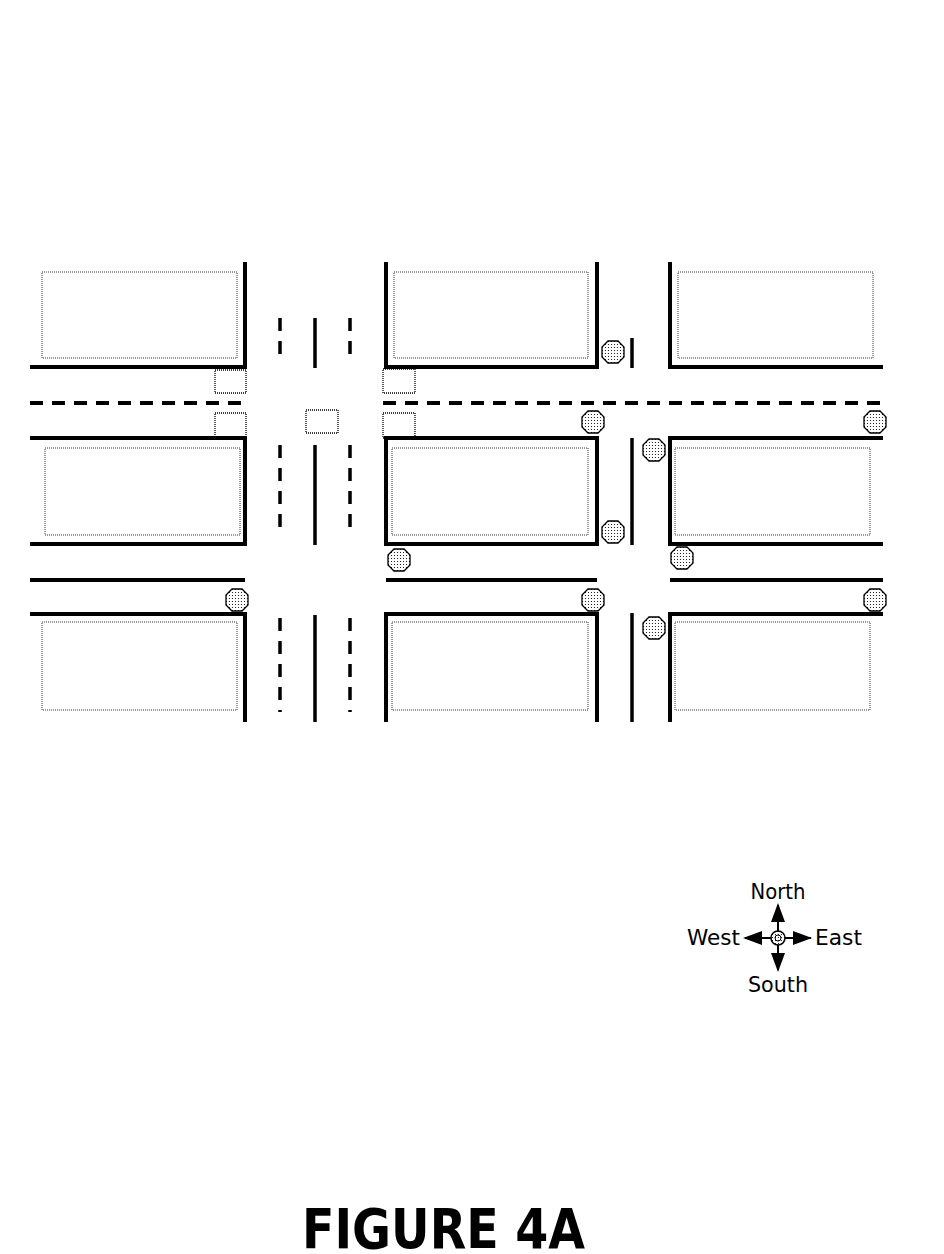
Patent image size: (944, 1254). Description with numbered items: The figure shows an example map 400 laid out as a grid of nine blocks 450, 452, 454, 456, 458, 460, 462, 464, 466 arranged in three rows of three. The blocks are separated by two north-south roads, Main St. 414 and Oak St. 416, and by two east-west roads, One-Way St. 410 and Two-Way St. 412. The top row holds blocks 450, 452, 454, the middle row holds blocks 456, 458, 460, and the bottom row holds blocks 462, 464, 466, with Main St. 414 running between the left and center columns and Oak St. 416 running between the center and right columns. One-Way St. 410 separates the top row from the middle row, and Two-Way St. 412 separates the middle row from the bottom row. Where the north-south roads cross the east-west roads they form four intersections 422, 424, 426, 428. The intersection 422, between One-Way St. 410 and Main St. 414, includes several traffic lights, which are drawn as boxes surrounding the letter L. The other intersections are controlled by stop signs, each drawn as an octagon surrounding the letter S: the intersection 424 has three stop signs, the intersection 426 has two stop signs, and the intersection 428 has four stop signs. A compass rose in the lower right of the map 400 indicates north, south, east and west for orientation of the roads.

The map 400 is at (843, 39).
The One-Way St. 410 is at (208, 398).
The Two-Way St. 412 is at (220, 578).
The Main St. 414 is at (297, 305).
The Oak St. 416 is at (616, 335).
The intersection 422 is at (297, 405).
The intersection 424 is at (614, 407).
The intersection 426 is at (297, 583).
The intersection 428 is at (614, 583).
The block 450 is at (191, 327).
The block 452 is at (542, 327).
The block 454 is at (826, 327).
The block 456 is at (193, 503).
The block 458 is at (542, 503).
The block 460 is at (824, 503).
The block 462 is at (191, 677).
The block 464 is at (542, 677).
The block 466 is at (824, 677).